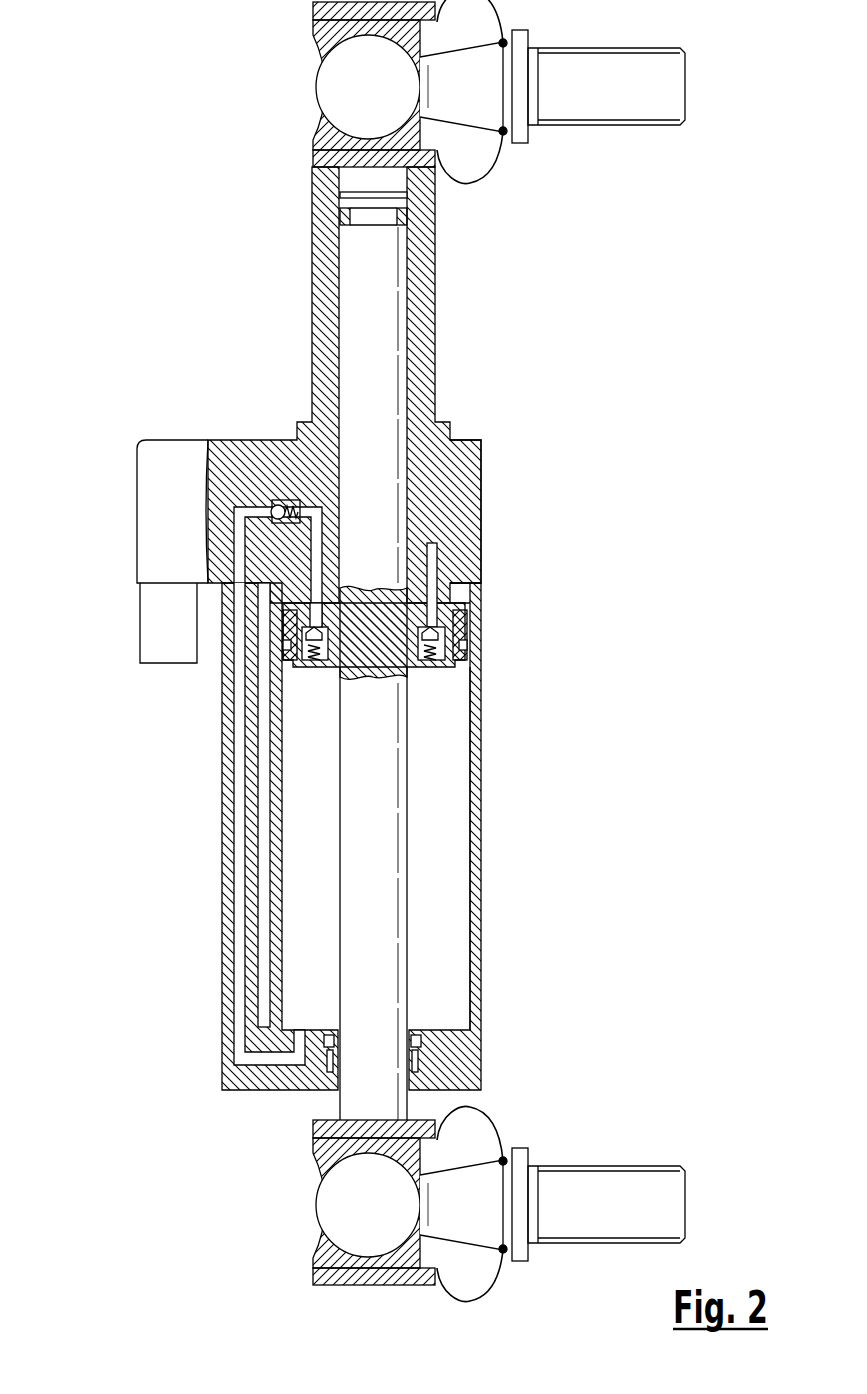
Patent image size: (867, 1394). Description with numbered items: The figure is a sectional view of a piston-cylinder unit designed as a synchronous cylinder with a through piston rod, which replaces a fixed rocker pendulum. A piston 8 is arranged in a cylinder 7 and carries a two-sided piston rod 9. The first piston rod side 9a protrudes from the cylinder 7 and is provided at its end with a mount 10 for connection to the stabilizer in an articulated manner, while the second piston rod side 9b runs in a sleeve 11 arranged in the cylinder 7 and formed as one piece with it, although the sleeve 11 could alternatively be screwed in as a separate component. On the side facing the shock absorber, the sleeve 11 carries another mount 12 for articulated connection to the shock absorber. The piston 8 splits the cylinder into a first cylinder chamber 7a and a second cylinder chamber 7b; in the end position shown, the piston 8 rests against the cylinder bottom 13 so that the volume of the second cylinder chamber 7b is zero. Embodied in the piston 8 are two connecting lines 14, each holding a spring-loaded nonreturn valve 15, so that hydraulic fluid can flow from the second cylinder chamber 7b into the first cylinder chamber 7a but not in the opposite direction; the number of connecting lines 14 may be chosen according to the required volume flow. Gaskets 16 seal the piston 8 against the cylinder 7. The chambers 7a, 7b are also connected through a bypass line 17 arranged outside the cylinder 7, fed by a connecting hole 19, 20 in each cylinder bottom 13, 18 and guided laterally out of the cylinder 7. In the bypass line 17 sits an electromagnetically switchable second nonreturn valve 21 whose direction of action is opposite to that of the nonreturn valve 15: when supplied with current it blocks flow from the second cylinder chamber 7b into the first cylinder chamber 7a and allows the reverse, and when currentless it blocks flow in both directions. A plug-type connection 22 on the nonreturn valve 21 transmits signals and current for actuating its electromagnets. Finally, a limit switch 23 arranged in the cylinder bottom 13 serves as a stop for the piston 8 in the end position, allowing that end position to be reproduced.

The cylinder 7 is at (470, 848).
The first cylinder chamber 7a is at (440, 898).
The second cylinder chamber 7b is at (466, 598).
The piston 8 is at (372, 648).
The two-sided piston rod 9 is at (415, 797).
The first piston rod side 9a is at (388, 972).
The second piston rod side 9b is at (388, 300).
The mount 10 is at (283, 1193).
The sleeve 11 is at (330, 262).
The mount 12 is at (283, 75).
The cylinder bottom 13 is at (440, 578).
The connecting line 14 is at (308, 612).
The spring-loaded nonreturn valve 15 is at (312, 668).
The gaskets 16 is at (470, 675).
The bypass line 17 is at (240, 944).
The cylinder bottom 18 is at (440, 1066).
The connecting hole 19 is at (298, 1058).
The connecting hole 20 is at (318, 565).
The electromagnetically switchable second nonreturn valve 21 is at (282, 492).
The plug-type connection 22 is at (155, 647).
The limit switch 23 is at (450, 548).